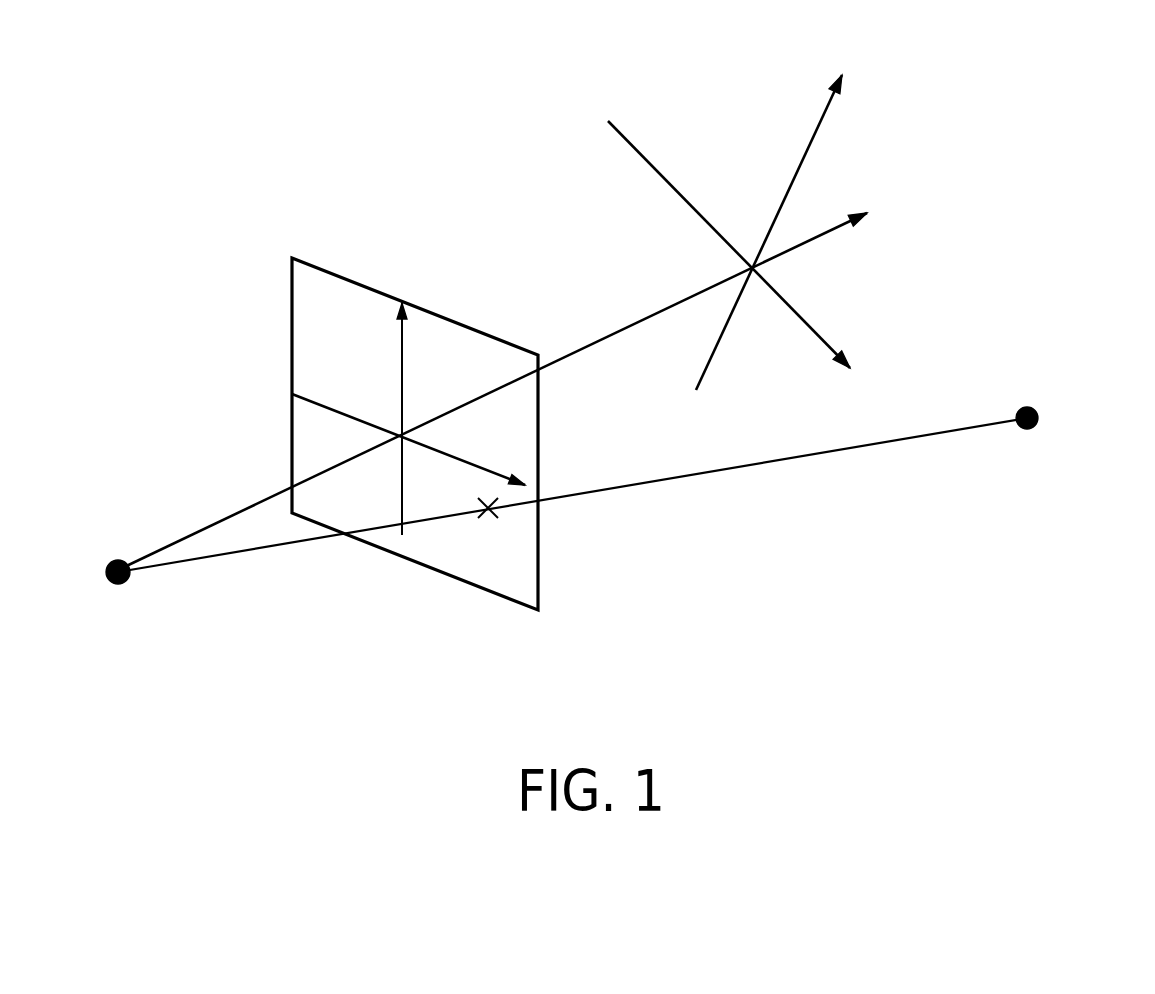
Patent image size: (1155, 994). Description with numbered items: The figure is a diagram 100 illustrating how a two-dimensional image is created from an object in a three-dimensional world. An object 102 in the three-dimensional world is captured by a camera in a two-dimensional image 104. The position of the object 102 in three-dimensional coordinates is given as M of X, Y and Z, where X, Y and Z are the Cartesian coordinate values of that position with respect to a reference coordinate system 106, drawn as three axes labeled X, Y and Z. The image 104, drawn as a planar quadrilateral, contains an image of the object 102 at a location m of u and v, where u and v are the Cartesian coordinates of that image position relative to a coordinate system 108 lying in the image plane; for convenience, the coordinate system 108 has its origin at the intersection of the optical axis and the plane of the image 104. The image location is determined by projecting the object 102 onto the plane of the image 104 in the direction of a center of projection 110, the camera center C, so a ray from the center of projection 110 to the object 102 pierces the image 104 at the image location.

The camera imaging system 100 is at (836, 614).
The object 102 is at (1027, 406).
The 2D image 104 is at (292, 312).
The reference coordinate system 106 is at (748, 262).
The coordinate system 108 is at (402, 362).
The center of projection 110 is at (118, 586).